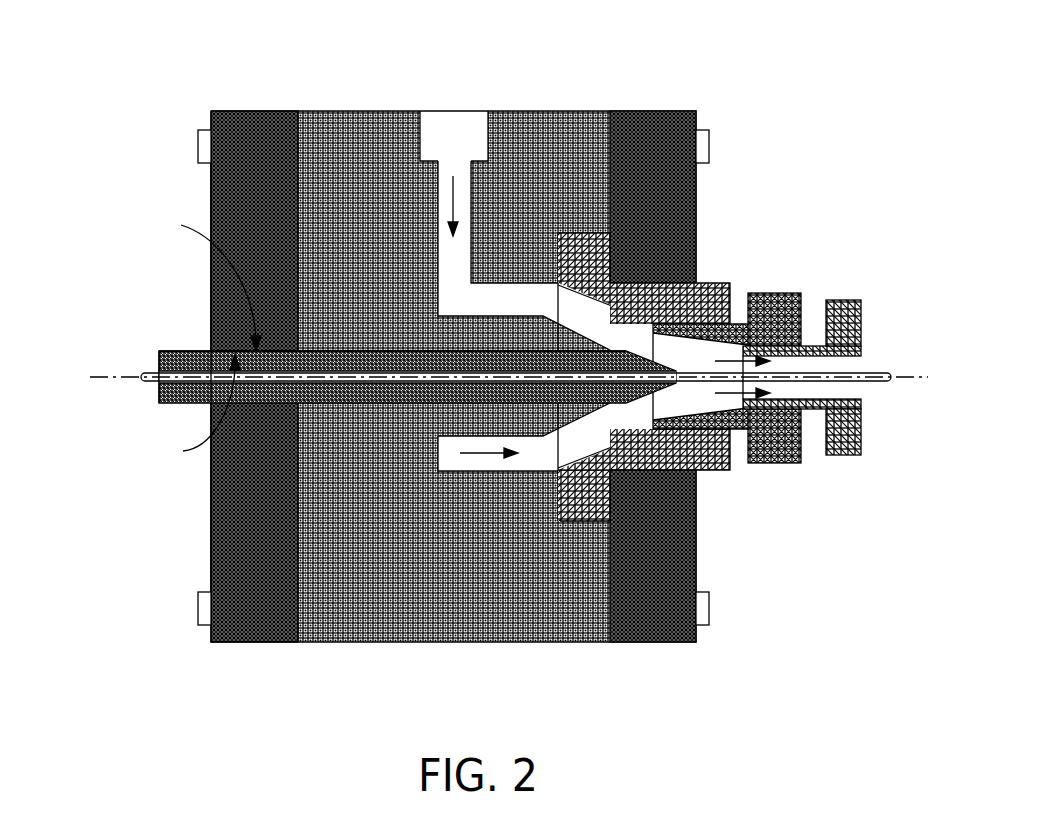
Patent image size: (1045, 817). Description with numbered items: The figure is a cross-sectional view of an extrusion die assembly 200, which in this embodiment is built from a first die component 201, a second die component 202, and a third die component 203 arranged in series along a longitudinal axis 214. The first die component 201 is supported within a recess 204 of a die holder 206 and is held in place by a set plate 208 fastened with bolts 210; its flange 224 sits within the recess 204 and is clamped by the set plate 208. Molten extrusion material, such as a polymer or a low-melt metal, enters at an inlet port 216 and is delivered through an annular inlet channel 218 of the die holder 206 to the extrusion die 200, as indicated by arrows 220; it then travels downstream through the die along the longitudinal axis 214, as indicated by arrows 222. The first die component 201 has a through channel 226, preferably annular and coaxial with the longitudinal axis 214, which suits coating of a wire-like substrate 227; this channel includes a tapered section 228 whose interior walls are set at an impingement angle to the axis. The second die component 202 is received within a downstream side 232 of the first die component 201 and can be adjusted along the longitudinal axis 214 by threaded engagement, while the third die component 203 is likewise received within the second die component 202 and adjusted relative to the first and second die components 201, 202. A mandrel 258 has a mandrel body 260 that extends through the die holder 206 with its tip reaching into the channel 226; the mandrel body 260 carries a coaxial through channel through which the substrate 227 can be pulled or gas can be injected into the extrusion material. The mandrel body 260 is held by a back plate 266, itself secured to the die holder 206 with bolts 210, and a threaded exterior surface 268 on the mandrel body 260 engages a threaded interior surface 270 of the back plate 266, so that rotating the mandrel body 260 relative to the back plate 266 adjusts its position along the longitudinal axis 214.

The extrusion die assembly 200 is at (491, 364).
The first die component 201 is at (702, 463).
The second die component 202 is at (783, 452).
The third die component 203 is at (853, 435).
The recess 204 is at (582, 515).
The die holder 206 is at (329, 103).
The set plate 208 is at (667, 104).
The bolts 210 is at (190, 122).
The longitudinal axis 214 is at (102, 368).
The inlet port 216 is at (460, 110).
The annular inlet channel 218 is at (480, 285).
The arrows 220 is at (445, 190).
The arrows 222 is at (716, 303).
The flange 224 is at (560, 225).
The through channel 226 is at (573, 305).
The substrate 227 is at (876, 362).
The tapered section 228 is at (612, 297).
The downstream side 232 is at (703, 275).
The mandrel 258 is at (188, 348).
The mandrel body 260 is at (162, 393).
The back plate 266 is at (215, 512).
The threaded exterior surface 268 is at (382, 280).
The threaded interior surface 270 is at (410, 412).